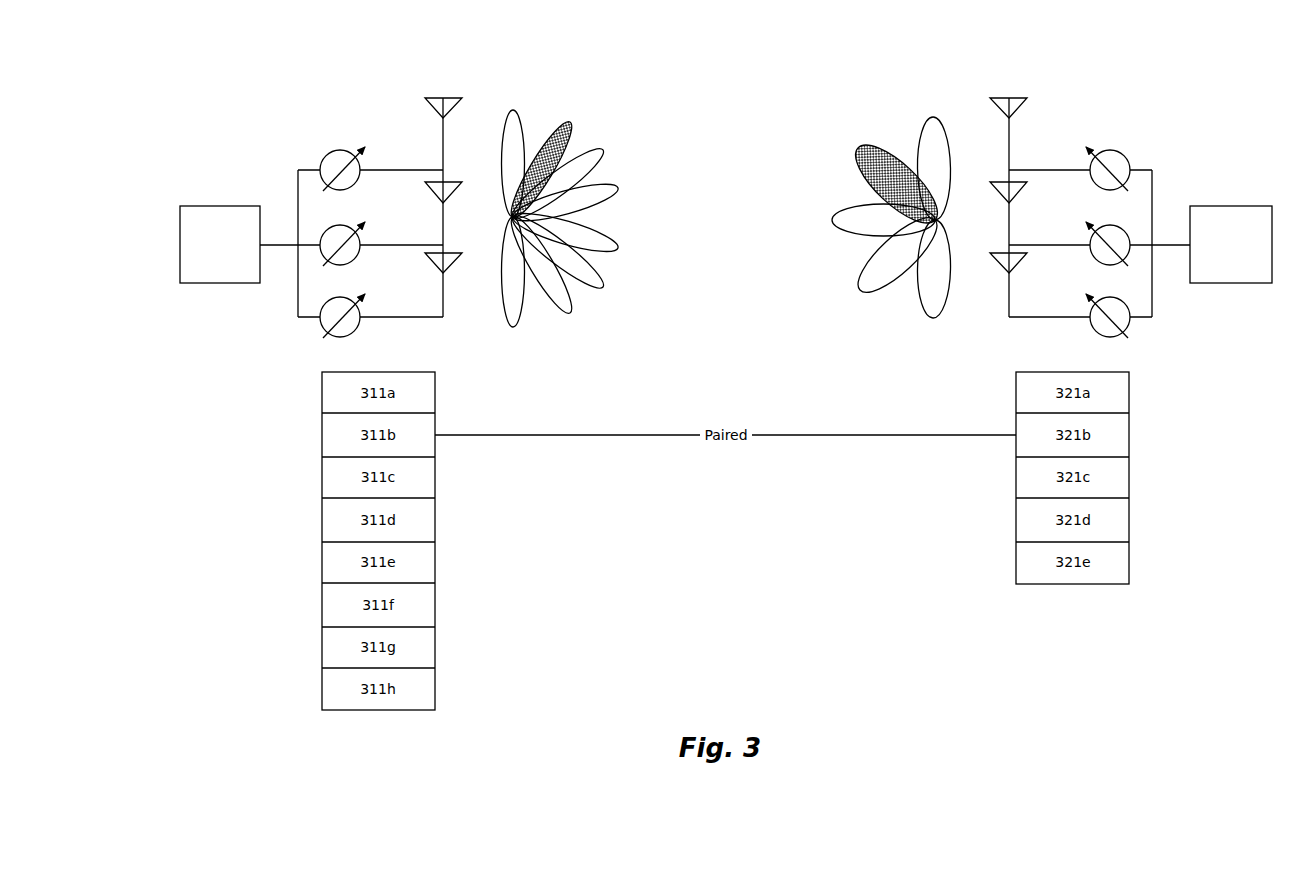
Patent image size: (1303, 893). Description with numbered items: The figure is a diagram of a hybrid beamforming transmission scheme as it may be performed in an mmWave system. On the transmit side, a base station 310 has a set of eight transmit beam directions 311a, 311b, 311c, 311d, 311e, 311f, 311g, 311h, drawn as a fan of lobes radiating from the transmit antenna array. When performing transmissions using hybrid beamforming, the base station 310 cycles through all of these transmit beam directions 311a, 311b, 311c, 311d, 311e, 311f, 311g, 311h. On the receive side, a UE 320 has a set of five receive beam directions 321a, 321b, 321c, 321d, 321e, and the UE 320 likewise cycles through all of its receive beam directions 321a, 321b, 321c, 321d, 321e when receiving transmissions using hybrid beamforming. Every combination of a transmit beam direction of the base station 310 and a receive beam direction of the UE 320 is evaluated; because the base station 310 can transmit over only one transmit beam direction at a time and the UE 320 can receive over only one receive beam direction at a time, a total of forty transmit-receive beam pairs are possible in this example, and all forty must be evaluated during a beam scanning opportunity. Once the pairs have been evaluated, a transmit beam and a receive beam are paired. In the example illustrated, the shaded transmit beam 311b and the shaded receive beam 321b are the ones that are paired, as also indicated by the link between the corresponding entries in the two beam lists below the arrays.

The base station 310 is at (442, 60).
The UE 320 is at (1034, 62).
The transmit beam direction 311a is at (522, 103).
The transmit beam 311b is at (573, 122).
The transmit beam direction 311c is at (607, 150).
The transmit beam direction 311d is at (627, 188).
The transmit beam direction 311e is at (627, 248).
The transmit beam direction 311f is at (607, 288).
The transmit beam direction 311g is at (573, 315).
The transmit beam direction 311h is at (523, 330).
The receive beam direction 321a is at (928, 113).
The receive beam 321b is at (855, 143).
The receive beam direction 321c is at (828, 222).
The receive beam direction 321d is at (852, 292).
The receive beam direction 321e is at (923, 323).